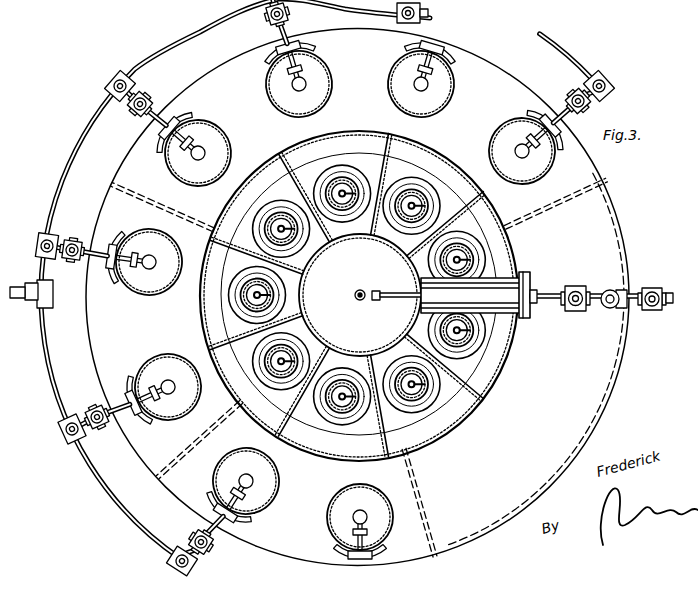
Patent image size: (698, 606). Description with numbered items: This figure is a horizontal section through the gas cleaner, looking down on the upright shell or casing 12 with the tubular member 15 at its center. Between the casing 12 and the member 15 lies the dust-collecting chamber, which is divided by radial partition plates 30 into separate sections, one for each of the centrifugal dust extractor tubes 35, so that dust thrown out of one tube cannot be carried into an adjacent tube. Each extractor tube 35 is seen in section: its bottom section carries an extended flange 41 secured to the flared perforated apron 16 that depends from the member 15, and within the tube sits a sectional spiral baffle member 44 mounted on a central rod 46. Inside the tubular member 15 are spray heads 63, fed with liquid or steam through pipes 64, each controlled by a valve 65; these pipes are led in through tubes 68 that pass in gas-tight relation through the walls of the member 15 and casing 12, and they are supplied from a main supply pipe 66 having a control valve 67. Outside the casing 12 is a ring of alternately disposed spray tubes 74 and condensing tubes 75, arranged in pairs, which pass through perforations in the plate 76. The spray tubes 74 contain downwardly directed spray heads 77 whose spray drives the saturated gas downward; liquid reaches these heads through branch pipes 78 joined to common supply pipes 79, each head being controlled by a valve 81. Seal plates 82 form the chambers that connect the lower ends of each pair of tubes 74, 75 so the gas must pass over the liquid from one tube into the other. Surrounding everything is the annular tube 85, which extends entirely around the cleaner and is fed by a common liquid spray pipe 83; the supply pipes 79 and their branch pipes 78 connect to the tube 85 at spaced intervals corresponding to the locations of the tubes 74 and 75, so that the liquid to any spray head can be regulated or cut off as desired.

The shell or casing 12 is at (512, 347).
The tubular member 15 is at (303, 277).
The perforated apron 16 is at (514, 242).
The radial partition plates 30 is at (386, 158).
The centrifugal dust extractor tubes 35 is at (282, 375).
The extended flange 41 is at (296, 340).
The sectional spiral baffle member 44 is at (447, 333).
The rod 46 is at (272, 370).
The spray heads 63 is at (366, 291).
The pipes 64 is at (550, 300).
The valve 65 is at (578, 312).
The main supply pipe 66 is at (612, 308).
The control valve 67 is at (654, 311).
The tubes 68 is at (475, 295).
The spray tubes 74 is at (327, 102).
The condensing tubes 75 is at (232, 143).
The plate 76 is at (357, 297).
The spray heads 77 is at (335, 300).
The pipes 78 is at (273, 30).
The common supply pipe 79 is at (112, 82).
The valve 81 is at (146, 98).
The seal plates 82 is at (147, 193).
The liquid spray pipe 83 is at (31, 303).
The annular tube 85 is at (147, 52).